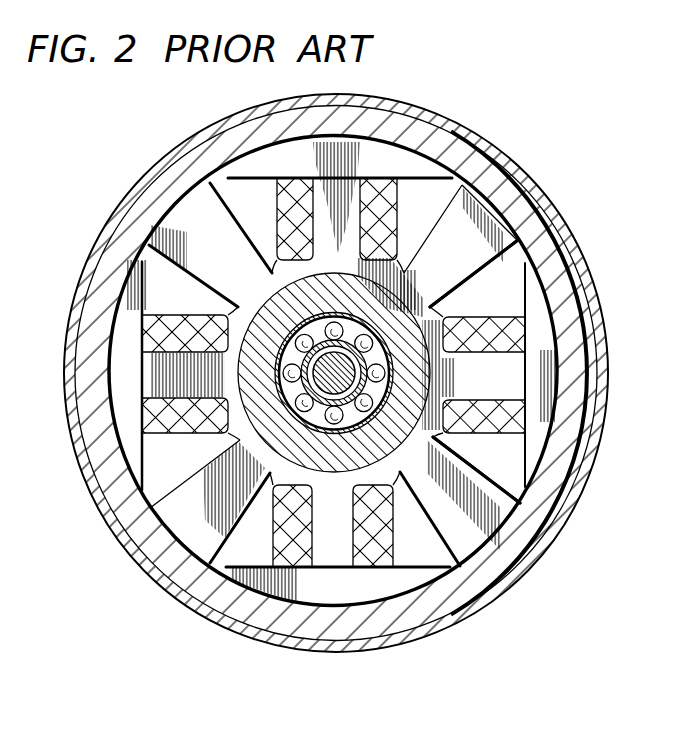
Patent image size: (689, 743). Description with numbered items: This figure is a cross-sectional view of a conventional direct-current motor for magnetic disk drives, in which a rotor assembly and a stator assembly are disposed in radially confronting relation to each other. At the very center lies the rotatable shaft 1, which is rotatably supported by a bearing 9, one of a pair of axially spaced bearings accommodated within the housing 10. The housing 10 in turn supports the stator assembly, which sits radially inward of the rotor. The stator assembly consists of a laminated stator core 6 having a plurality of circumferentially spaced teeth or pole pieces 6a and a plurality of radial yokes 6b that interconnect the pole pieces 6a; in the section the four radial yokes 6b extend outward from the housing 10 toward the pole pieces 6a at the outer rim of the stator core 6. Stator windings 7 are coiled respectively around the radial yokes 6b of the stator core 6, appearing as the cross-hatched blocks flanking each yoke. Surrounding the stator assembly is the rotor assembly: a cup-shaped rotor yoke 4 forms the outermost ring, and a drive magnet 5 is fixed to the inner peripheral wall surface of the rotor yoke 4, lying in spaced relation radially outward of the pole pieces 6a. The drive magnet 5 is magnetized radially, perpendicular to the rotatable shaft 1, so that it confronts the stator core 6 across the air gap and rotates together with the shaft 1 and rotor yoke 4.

The rotatable shaft 1 is at (498, 538).
The rotor yoke 4 is at (182, 140).
The drive magnet 5 is at (115, 220).
The stator core 6 is at (407, 167).
The pole pieces 6a is at (555, 310).
The radial yokes 6b is at (505, 383).
The stator windings 7 is at (160, 413).
The bearing 9 is at (337, 437).
The housing 10 is at (280, 433).